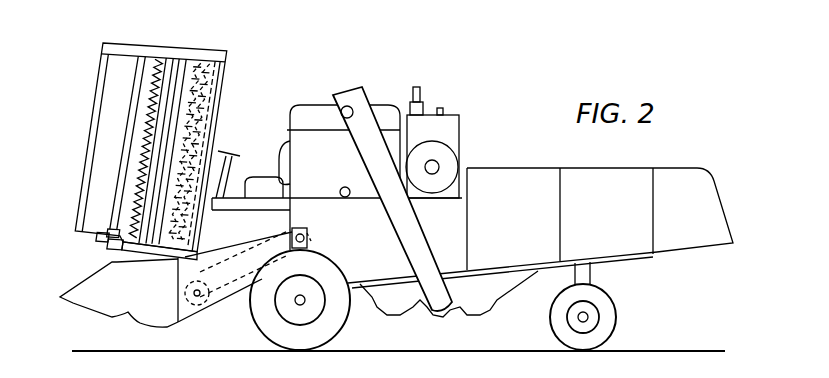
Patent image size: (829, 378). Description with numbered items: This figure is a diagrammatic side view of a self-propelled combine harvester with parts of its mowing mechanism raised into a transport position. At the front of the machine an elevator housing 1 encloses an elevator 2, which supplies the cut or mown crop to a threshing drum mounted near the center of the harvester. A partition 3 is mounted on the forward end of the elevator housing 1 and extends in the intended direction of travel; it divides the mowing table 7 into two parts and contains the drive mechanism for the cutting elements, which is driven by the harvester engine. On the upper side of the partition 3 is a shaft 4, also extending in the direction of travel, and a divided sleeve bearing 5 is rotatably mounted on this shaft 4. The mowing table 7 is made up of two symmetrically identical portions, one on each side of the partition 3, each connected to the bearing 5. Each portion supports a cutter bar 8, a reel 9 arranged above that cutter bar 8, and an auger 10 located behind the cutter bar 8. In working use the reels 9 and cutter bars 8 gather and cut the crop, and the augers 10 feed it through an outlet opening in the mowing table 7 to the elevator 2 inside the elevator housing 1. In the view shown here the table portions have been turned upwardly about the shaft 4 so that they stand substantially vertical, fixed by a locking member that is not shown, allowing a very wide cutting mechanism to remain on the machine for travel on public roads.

The elevator housing 1 is at (220, 302).
The elevator 2 is at (267, 238).
The partition 3 is at (143, 318).
The shaft 4 is at (160, 251).
The divided sleeve bearing 5 is at (109, 241).
The mowing table 7 is at (142, 151).
The cutter bar 8 is at (146, 148).
The reel 9 is at (141, 147).
The auger 10 is at (188, 152).